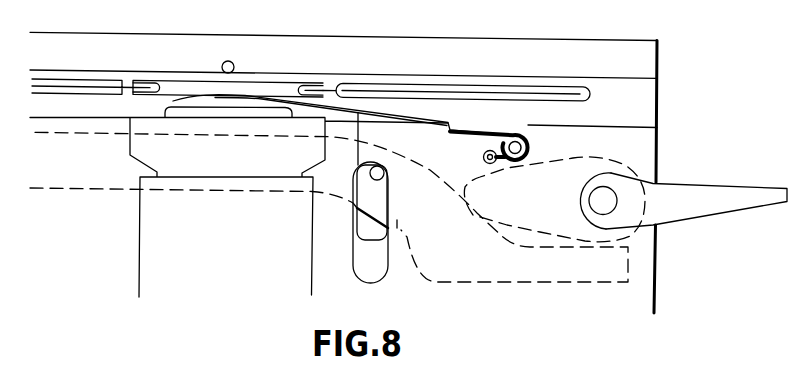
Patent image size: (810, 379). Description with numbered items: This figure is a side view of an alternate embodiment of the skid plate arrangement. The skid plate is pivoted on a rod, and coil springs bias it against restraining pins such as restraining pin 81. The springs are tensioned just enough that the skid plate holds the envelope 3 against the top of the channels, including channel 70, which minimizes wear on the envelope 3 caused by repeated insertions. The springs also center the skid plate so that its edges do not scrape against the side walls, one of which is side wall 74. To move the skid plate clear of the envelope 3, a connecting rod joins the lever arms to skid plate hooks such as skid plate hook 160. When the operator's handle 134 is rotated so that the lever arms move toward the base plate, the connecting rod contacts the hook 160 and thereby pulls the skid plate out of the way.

The envelope 3 is at (591, 97).
The channel 70 is at (658, 117).
The side wall 74 is at (658, 63).
The restraining pin 81 is at (228, 59).
The operator's handle 134 is at (739, 187).
The skid plate hook 160 is at (398, 228).